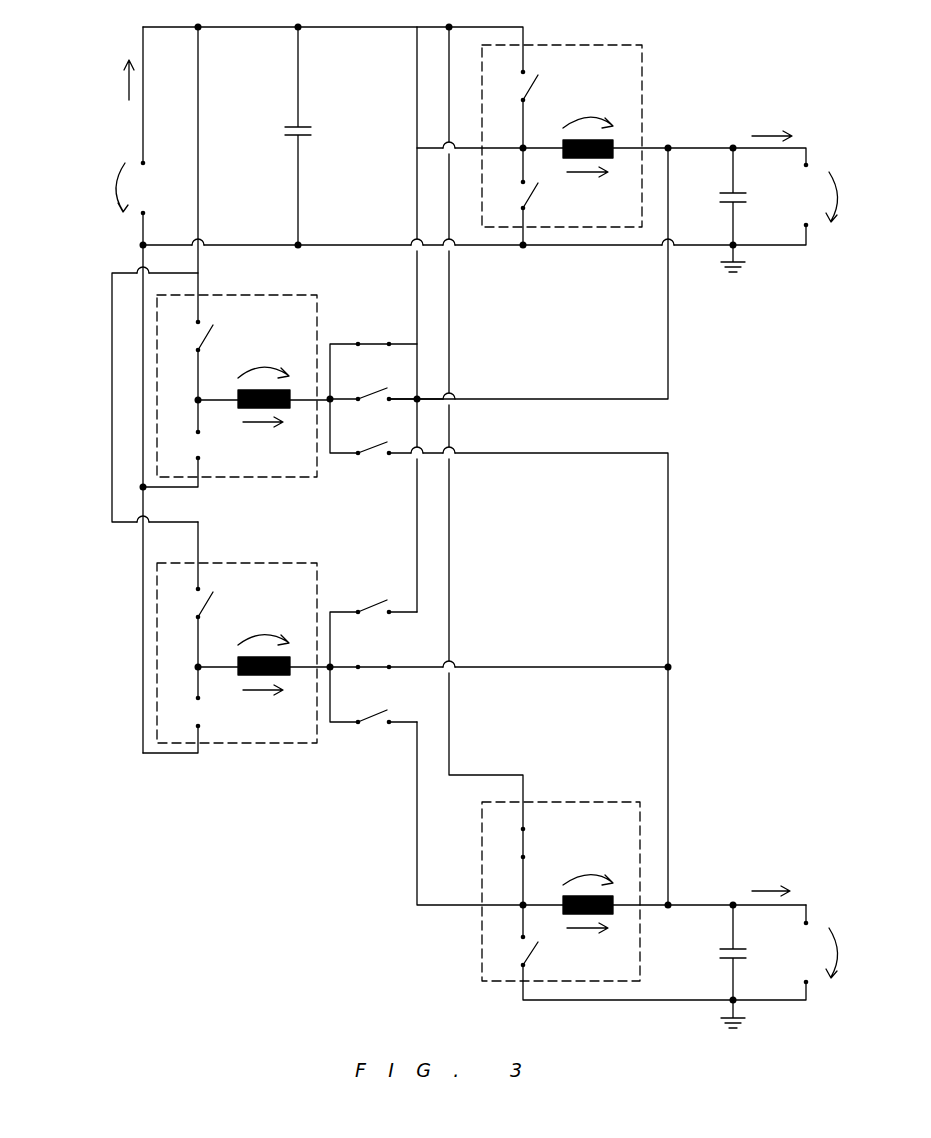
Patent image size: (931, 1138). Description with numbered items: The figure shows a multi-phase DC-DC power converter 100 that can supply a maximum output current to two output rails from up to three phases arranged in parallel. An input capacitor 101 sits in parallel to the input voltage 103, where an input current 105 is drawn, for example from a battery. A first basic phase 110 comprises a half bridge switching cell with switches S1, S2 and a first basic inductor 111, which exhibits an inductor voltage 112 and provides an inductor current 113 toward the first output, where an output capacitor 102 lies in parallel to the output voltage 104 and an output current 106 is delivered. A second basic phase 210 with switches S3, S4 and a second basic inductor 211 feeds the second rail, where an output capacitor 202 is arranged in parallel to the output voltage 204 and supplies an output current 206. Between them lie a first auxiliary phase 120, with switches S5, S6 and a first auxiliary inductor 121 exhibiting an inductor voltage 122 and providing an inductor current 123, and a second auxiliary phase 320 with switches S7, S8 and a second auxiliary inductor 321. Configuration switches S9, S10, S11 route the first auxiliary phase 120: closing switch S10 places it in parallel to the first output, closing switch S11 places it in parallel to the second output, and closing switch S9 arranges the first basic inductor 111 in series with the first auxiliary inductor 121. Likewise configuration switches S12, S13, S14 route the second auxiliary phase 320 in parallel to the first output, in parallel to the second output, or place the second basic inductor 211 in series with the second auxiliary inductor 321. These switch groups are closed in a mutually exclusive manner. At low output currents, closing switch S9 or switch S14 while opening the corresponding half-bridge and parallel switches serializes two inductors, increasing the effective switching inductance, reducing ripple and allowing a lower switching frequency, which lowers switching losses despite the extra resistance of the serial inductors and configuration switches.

The multi-phase power converter 100 is at (700, 430).
The input capacitor 101 is at (284, 132).
The output capacitor 102 is at (714, 200).
The input voltage 103 is at (130, 187).
The output voltage 104 is at (828, 188).
The input current 105 is at (126, 79).
The output current 106 is at (771, 131).
The basic phase 110 is at (595, 136).
The first basic inductor 111 is at (563, 142).
The inductor voltage 112 is at (602, 113).
The inductor current 113 is at (587, 177).
The first auxiliary phase 120 is at (246, 377).
The first auxiliary inductor 121 is at (238, 392).
The inductor voltage 122 is at (280, 362).
The inductor current 123 is at (265, 427).
The second auxiliary phase 320 is at (246, 644).
The second auxiliary inductor 321 is at (238, 659).
The basic phase 210 is at (570, 881).
The second basic inductor 211 is at (563, 898).
The output capacitor 202 is at (714, 956).
The output voltage 204 is at (828, 946).
The output current 206 is at (771, 888).
The switch S1 is at (506, 88).
The switch S2 is at (502, 194).
The switch S3 is at (506, 845).
The switch S4 is at (502, 953).
The switch S5 is at (180, 338).
The switch S6 is at (177, 448).
The switch S7 is at (180, 608).
The switch S8 is at (177, 715).
The configuration switch S9 is at (376, 329).
The configuration switch S10 is at (382, 378).
The configuration switch S11 is at (382, 431).
The configuration switch S12 is at (382, 590).
The configuration switch S13 is at (382, 643).
The configuration switch S14 is at (382, 698).